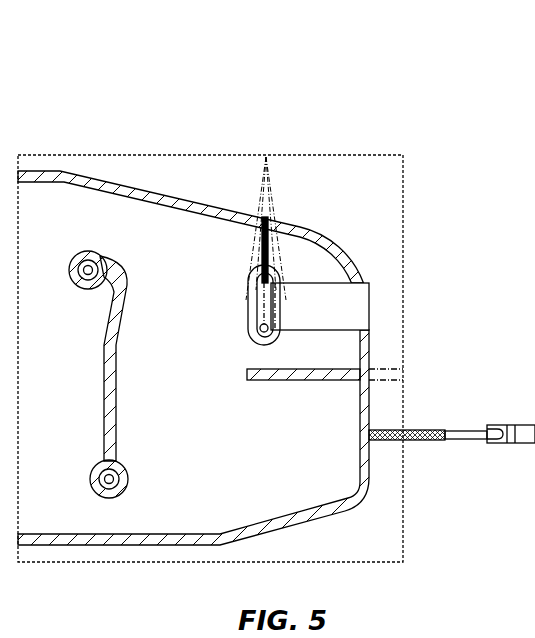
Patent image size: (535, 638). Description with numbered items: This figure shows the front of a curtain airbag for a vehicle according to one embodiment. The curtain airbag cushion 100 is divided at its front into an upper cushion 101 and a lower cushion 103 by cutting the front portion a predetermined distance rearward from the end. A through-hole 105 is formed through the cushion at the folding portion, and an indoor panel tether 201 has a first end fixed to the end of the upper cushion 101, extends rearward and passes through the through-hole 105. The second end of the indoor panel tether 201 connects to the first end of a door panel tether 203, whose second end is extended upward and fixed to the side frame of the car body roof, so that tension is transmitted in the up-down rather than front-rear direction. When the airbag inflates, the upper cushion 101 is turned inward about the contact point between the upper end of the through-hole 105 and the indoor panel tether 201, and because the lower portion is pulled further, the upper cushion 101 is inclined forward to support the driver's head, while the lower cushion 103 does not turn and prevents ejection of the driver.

The curtain airbag cushion 100 is at (178, 137).
The upper cushion 101 is at (335, 275).
The lower cushion 103 is at (325, 478).
The through-hole 105 is at (264, 302).
The indoor panel tether 201 is at (353, 303).
The door panel tether 203 is at (268, 217).